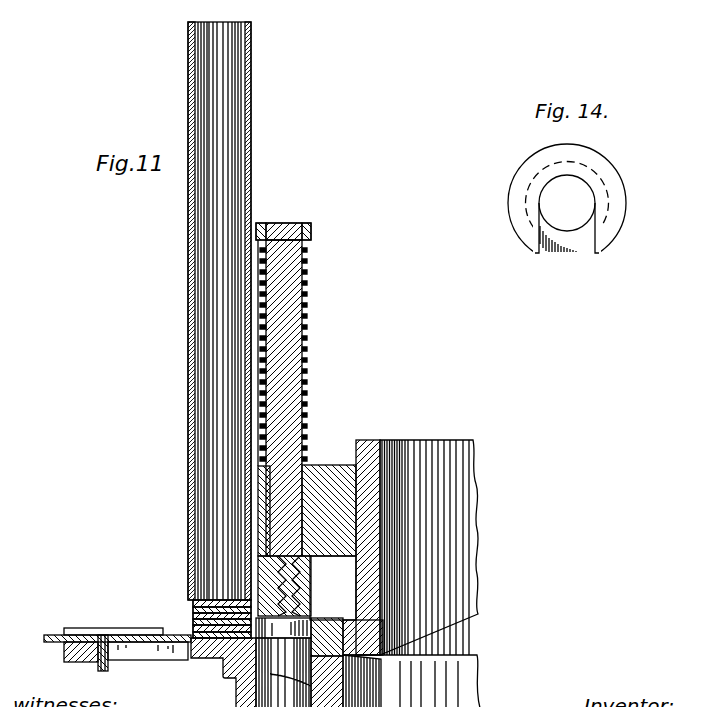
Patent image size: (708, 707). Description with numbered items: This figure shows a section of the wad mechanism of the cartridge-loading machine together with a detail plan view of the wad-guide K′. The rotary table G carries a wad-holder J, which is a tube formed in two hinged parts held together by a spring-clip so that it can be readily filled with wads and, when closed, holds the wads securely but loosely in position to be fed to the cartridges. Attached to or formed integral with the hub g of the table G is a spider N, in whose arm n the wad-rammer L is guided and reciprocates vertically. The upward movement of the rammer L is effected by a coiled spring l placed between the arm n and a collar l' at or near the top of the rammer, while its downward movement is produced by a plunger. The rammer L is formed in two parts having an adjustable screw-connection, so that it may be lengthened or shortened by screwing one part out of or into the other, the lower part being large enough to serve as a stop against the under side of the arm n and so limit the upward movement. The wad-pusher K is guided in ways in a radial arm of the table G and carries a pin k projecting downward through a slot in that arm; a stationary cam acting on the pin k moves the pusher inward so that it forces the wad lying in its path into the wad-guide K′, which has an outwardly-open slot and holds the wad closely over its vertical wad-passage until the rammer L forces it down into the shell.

In FIG. 11, the wad-holder J is at (204, 311).
In FIG. 11, the wad-rammer L is at (284, 215).
In FIG. 11, the collar l' is at (298, 226).
In FIG. 11, the coiled spring l is at (293, 428).
In FIG. 11, the spider N is at (338, 457).
In FIG. 11, the arm n is at (333, 588).
In FIG. 11, the hub g is at (440, 483).
In FIG. 11, the rotary table G is at (411, 681).
In FIG. 11, the wad-guide K′ is at (283, 662).
In FIG. 14, the wad-guide K′ is at (567, 207).
In FIG. 11, the wad-pusher K is at (48, 627).
In FIG. 11, the pin k is at (96, 663).